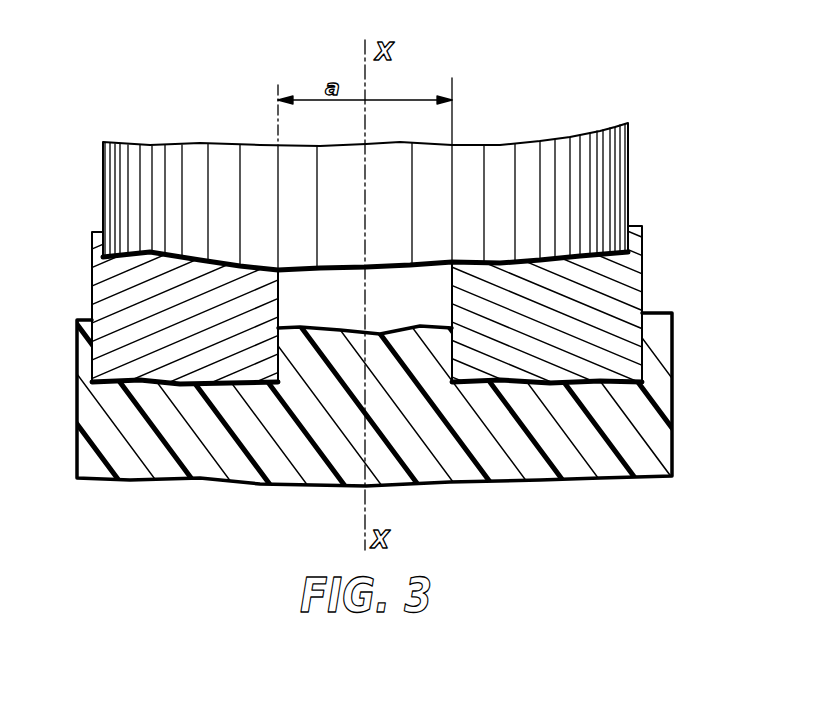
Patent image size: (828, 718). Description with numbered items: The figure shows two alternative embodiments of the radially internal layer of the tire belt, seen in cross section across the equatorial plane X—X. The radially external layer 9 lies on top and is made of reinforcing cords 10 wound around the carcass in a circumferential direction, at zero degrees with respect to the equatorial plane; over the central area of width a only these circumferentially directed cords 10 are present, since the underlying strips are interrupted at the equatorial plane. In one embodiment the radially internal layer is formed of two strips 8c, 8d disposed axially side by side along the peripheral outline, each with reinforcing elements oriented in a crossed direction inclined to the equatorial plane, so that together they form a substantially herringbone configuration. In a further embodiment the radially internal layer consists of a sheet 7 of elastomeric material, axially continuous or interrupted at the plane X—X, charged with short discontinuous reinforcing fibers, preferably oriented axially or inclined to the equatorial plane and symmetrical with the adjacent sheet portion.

The sheet of elastomeric material 7 is at (102, 417).
The strip 8c is at (123, 305).
The strip 8d is at (607, 283).
The radially external layer 9 is at (362, 196).
The cords 10 is at (163, 212).